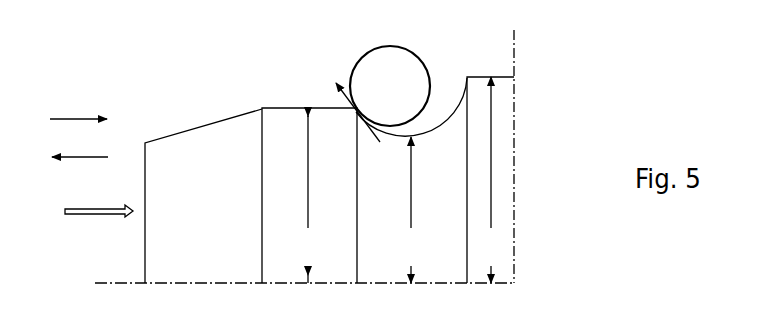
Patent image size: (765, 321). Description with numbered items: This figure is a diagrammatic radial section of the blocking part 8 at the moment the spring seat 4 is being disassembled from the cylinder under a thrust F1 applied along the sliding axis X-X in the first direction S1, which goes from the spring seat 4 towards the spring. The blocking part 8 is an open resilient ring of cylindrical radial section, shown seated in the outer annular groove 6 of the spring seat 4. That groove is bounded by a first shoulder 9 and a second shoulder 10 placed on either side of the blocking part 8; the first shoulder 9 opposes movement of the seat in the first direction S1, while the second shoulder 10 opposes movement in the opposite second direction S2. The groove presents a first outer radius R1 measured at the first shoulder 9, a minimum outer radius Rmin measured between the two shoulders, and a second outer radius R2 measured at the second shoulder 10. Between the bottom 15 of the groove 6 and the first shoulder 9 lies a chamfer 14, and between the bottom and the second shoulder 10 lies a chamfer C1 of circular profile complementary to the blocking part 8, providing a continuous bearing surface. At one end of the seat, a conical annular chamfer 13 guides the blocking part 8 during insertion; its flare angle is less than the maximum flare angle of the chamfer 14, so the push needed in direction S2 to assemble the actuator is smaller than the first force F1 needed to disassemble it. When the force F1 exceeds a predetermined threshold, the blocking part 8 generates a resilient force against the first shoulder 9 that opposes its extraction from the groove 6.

The spring seat 4 is at (502, 195).
The outer annular groove 6 is at (462, 150).
The blocking part 8 is at (383, 48).
The first shoulder 9 is at (285, 108).
The second shoulder 10 is at (475, 77).
The conical annular chamfer 13 is at (198, 127).
The chamfer of the groove 14 is at (363, 127).
The bottom of the groove 15 is at (437, 133).
The chamfer of circular profile C1 is at (447, 126).
The first outer radius R1 is at (308, 195).
The minimum outer radius Rmin is at (415, 210).
The second outer radius R2 is at (491, 180).
The first direction S1 is at (78, 106).
The second direction S2 is at (80, 145).
The first force F1 is at (99, 200).
The sliding axis X-X is at (125, 282).